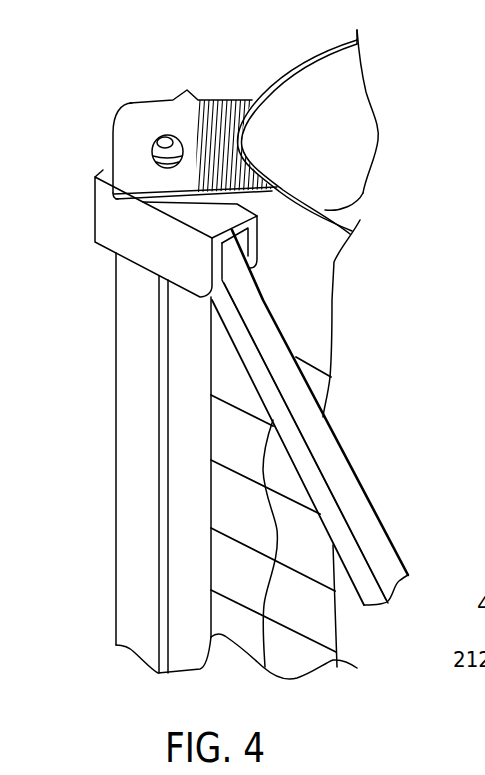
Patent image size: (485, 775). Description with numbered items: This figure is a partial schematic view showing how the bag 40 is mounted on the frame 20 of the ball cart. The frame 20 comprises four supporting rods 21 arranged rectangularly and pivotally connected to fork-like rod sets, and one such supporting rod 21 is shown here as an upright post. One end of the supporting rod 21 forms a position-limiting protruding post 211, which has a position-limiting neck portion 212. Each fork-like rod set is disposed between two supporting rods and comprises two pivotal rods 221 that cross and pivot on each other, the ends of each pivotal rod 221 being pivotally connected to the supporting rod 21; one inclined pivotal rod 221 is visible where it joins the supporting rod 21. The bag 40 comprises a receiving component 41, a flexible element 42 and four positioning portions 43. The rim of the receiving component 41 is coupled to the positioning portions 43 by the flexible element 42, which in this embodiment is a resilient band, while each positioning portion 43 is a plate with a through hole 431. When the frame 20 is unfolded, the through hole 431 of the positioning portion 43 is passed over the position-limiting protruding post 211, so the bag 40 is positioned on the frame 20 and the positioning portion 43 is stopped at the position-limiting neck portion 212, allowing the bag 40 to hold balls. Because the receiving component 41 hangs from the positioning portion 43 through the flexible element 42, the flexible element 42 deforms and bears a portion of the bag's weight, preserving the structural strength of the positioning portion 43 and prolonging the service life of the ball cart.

The frame 20 is at (115, 467).
The supporting rod 21 is at (133, 400).
The position-limiting protruding post 211 is at (163, 140).
The position-limiting neck portion 212 is at (170, 160).
The pivotal rod 221 is at (338, 466).
The bag 40 is at (366, 91).
The receiving component 41 is at (307, 87).
The flexible element 42 is at (223, 102).
The positioning portion 43 is at (173, 112).
The through hole 431 is at (167, 165).